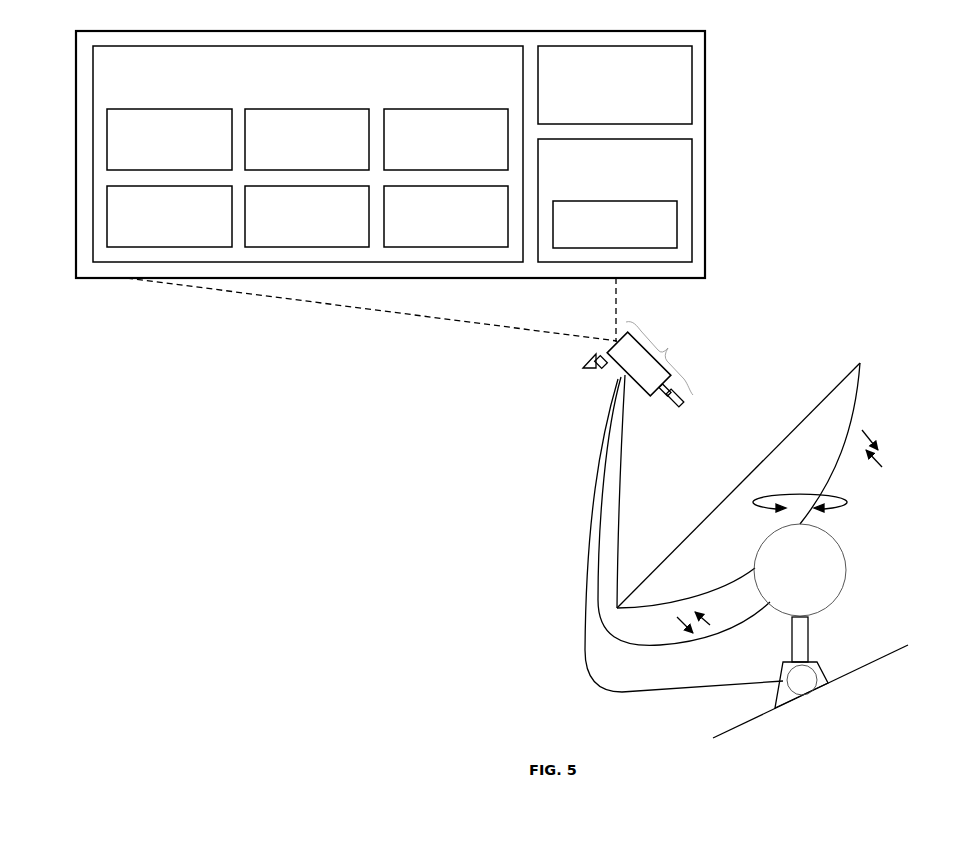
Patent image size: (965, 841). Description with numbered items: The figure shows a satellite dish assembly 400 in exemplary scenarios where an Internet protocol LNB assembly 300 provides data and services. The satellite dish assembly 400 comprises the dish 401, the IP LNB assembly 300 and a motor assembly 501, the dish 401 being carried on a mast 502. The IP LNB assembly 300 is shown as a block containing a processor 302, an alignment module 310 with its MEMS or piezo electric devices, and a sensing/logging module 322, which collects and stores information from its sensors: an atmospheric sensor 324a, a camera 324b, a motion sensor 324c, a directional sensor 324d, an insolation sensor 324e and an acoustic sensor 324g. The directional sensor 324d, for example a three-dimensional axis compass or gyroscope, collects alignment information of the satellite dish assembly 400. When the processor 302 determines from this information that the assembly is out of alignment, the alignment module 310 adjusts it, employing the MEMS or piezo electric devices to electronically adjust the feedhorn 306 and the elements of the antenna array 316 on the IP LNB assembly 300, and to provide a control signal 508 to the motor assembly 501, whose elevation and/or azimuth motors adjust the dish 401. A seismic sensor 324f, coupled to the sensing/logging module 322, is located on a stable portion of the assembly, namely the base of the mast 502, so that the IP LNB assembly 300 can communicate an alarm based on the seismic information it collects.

The satellite dish assembly 400 is at (878, 152).
The sensing/logging module 322 is at (294, 93).
The atmospheric sensor 324a is at (151, 166).
The camera 324b is at (288, 156).
The motion sensor 324c is at (428, 166).
The directional sensor 324d is at (151, 244).
The insolation sensor 324e is at (288, 244).
The acoustic sensor 324g is at (428, 244).
The seismic sensor 324f is at (787, 693).
The processor 302 is at (601, 103).
The alignment module 310 is at (601, 184).
The IP LNB assembly 300 is at (667, 341).
The antenna array 316 is at (590, 370).
The feedhorn 306 is at (662, 401).
The control signal 508 is at (737, 632).
The dish 401 is at (857, 398).
The motor assembly 501 is at (786, 599).
The mast 502 is at (808, 639).